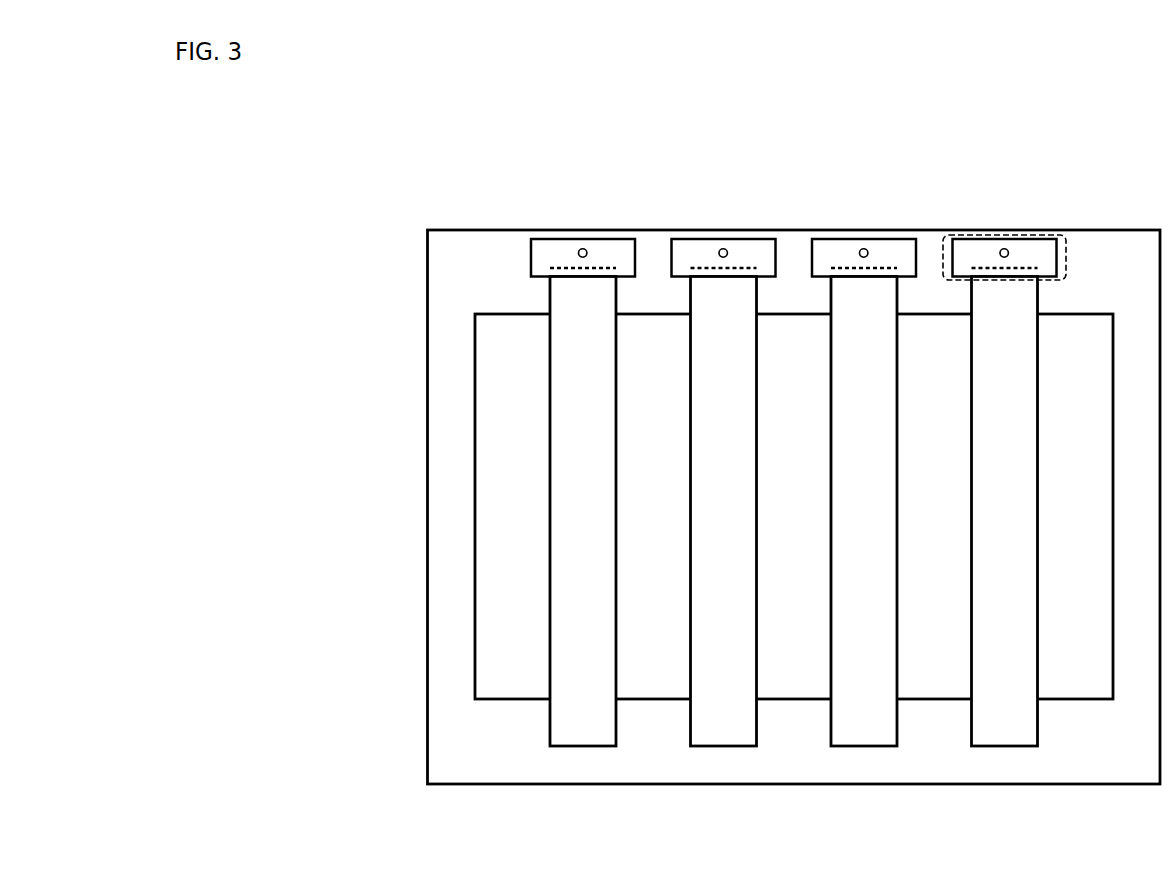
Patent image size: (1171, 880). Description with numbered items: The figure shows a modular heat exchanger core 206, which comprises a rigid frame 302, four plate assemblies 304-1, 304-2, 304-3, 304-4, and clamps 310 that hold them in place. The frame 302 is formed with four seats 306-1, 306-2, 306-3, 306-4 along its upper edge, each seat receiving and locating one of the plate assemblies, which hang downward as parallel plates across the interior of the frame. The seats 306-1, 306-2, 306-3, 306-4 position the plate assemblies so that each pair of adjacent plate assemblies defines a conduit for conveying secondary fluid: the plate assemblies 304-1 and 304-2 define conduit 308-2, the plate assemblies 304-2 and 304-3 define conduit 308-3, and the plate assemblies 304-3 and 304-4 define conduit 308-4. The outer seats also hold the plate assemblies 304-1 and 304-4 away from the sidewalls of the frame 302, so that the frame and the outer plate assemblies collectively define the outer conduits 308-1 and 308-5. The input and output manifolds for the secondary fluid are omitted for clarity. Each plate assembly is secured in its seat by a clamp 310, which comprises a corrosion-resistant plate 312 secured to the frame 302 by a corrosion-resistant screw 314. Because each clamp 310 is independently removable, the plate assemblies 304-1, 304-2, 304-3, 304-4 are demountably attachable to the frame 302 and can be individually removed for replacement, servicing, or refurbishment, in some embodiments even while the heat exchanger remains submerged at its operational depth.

The core 206 is at (335, 198).
The frame 302 is at (427, 455).
The plate assembly 304-1 is at (549, 470).
The plate assembly 304-2 is at (690, 470).
The plate assembly 304-3 is at (830, 470).
The plate assembly 304-4 is at (970, 470).
The seat 306-1 is at (553, 507).
The seat 306-2 is at (694, 507).
The seat 306-3 is at (834, 507).
The seat 306-4 is at (986, 507).
The conduit 308-1 is at (538, 538).
The conduit 308-2 is at (678, 538).
The conduit 308-3 is at (819, 538).
The conduit 308-4 is at (960, 538).
The conduit 308-5 is at (1100, 538).
The clamp 310 is at (1067, 248).
The corrosion-resistant plate 312 is at (976, 248).
The corrosion-resistant screw 314 is at (1012, 253).